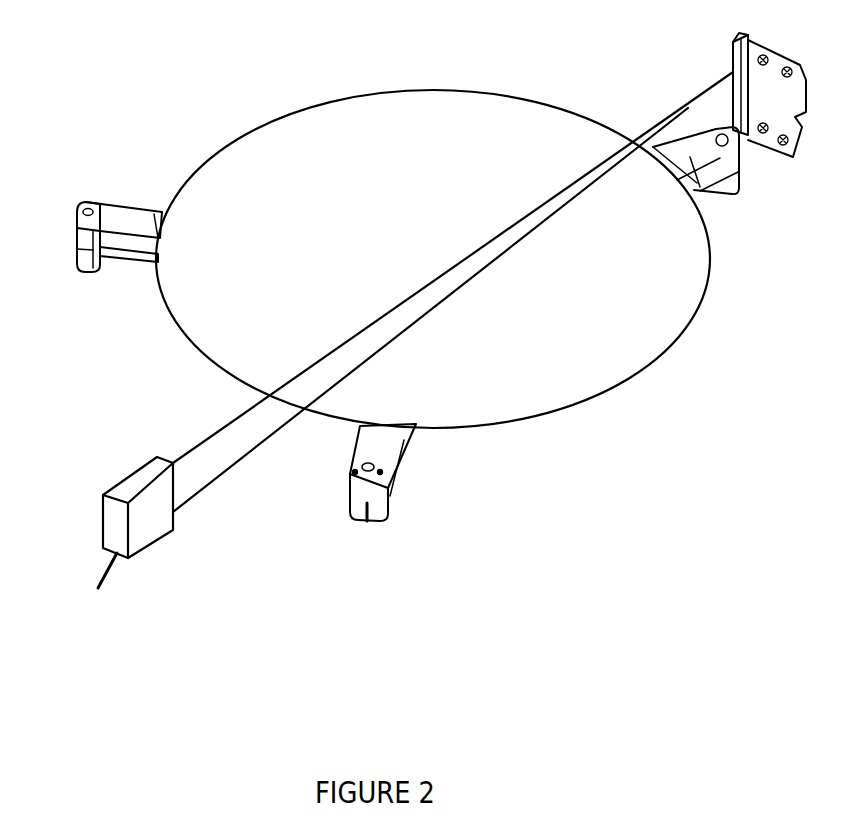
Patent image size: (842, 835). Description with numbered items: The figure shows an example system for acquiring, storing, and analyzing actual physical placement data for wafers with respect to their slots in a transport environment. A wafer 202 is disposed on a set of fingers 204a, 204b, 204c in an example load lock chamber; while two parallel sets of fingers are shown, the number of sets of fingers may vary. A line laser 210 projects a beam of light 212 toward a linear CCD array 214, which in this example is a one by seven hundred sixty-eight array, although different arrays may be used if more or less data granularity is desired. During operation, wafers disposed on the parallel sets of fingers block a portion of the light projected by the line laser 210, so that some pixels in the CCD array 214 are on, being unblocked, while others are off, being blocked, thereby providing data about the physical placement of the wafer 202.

The wafer 202 is at (410, 122).
The finger 204a is at (370, 443).
The finger 204b is at (703, 186).
The finger 204c is at (115, 213).
The line laser 210 is at (109, 543).
The beam of light 212 is at (221, 440).
The linear CCD array 214 is at (728, 45).